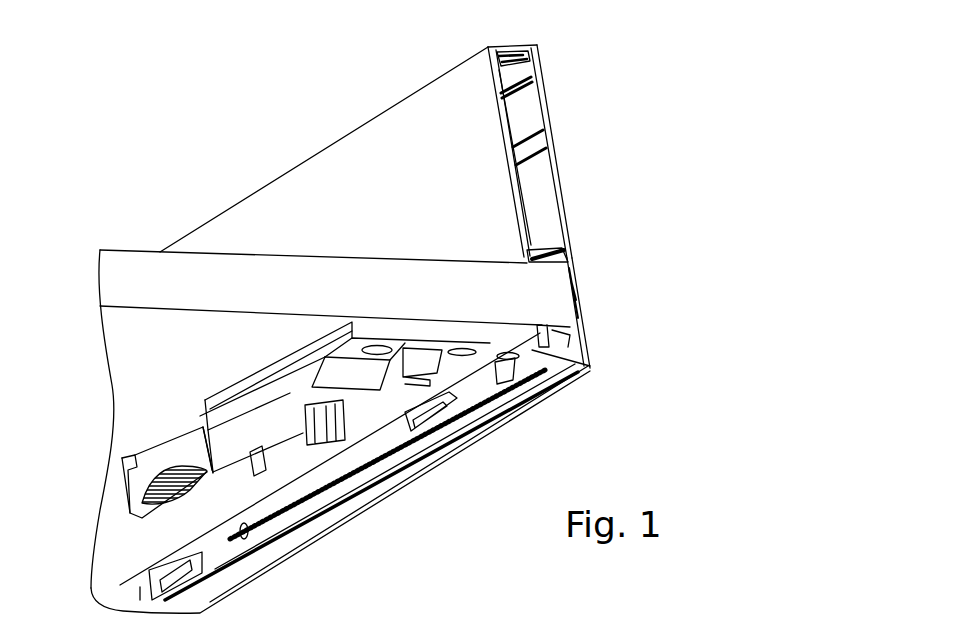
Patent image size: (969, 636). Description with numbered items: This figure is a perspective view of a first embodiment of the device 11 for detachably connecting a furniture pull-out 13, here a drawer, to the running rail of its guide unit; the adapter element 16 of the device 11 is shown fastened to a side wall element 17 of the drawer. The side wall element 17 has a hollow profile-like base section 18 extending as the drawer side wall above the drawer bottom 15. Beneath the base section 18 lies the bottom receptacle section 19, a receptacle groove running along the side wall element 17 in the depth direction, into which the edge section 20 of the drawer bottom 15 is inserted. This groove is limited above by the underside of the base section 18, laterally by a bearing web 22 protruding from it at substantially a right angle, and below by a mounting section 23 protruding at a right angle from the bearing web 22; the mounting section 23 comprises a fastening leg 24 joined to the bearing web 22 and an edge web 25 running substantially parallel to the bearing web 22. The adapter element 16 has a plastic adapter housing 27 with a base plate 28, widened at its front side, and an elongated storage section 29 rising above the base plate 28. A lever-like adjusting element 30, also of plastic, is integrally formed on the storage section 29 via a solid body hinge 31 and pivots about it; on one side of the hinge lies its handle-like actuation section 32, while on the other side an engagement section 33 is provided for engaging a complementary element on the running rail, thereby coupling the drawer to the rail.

The device 11 is at (580, 58).
The furniture pull-out 13 is at (537, 47).
The drawer bottom 15 is at (127, 267).
The adapter element 16 is at (190, 398).
The side wall element 17 is at (561, 154).
The base section 18 is at (540, 100).
The bottom receptacle section 19 is at (574, 263).
The edge section 20 is at (550, 308).
The bearing web 22 is at (577, 290).
The mounting section 23 is at (591, 362).
The fastening leg 24 is at (570, 333).
The edge web 25 is at (508, 368).
The adapter housing 27 is at (277, 357).
The base plate 28 is at (352, 343).
The storage section 29 is at (257, 418).
The adjusting element 30 is at (121, 488).
The solid body hinge 31 is at (258, 468).
The actuation section 32 is at (163, 459).
The engagement section 33 is at (288, 455).